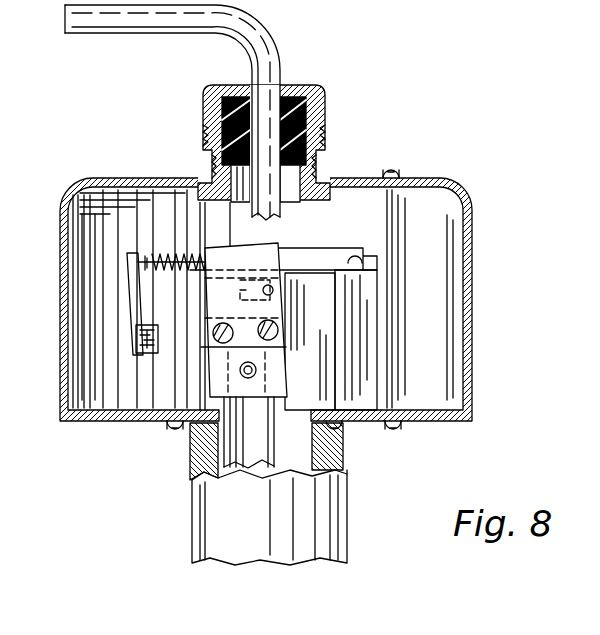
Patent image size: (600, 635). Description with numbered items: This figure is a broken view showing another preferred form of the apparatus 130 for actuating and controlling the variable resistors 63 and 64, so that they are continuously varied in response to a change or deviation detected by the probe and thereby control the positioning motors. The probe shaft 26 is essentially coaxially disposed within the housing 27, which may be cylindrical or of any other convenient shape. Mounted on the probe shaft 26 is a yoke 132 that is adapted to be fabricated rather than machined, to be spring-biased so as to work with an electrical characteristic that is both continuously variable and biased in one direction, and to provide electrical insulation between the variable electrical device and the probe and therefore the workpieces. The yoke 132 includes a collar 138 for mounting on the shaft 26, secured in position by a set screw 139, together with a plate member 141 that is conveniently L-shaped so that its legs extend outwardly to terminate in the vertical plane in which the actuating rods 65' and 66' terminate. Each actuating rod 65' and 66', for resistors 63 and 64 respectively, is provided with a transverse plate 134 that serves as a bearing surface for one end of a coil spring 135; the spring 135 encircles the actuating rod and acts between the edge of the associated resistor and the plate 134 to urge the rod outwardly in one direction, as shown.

The probe shaft 26 is at (240, 442).
The housing 27 is at (223, 518).
The variable resistor 63 is at (297, 249).
The variable resistor 64 is at (282, 313).
The actuating rod 65' is at (76, 307).
The actuating rod 66' is at (281, 292).
The apparatus for actuating and controlling the resistors 130 is at (140, 367).
The yoke 132 is at (300, 377).
The transverse plate 134 is at (147, 250).
The coil spring 135 is at (172, 252).
The collar 138 is at (273, 383).
The set screw 139 is at (257, 367).
The plate member 141 is at (147, 330).